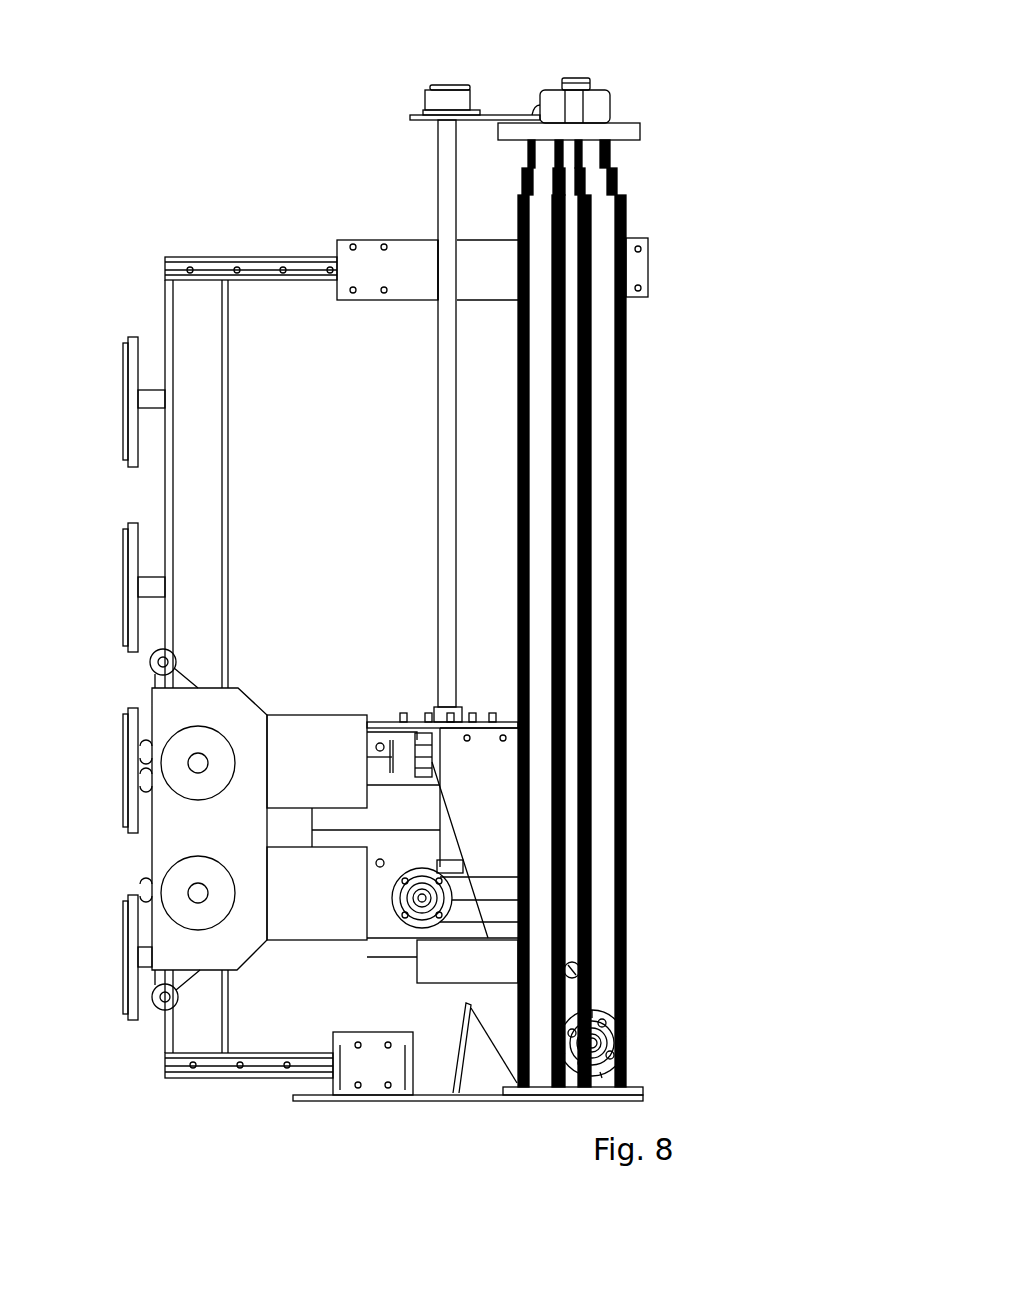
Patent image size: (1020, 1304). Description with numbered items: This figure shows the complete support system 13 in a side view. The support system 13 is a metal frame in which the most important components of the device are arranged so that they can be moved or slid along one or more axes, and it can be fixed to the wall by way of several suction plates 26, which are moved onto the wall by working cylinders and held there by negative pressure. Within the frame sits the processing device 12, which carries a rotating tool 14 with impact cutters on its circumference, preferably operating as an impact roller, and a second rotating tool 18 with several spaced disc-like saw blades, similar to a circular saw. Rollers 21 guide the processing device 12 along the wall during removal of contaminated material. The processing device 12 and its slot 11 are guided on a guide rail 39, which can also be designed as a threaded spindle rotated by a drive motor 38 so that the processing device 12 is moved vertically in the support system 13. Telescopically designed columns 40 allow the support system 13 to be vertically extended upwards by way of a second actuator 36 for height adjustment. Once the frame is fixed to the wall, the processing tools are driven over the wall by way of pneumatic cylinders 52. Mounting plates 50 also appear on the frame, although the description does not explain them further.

The support system 13 is at (648, 94).
The guide rail 39 is at (447, 158).
The mounting plate 50 is at (412, 255).
The telescopically designed columns 40 is at (607, 478).
The suction plates 26 is at (127, 448).
The rollers 21 is at (150, 660).
The processing device 12 is at (140, 852).
The second rotating tool 18 is at (150, 757).
The rotating tool 14 is at (150, 887).
The pneumatic cylinders 52 is at (398, 750).
The slot 11 is at (482, 755).
The drive motor 38 is at (415, 908).
The second actuator 36 is at (640, 1016).